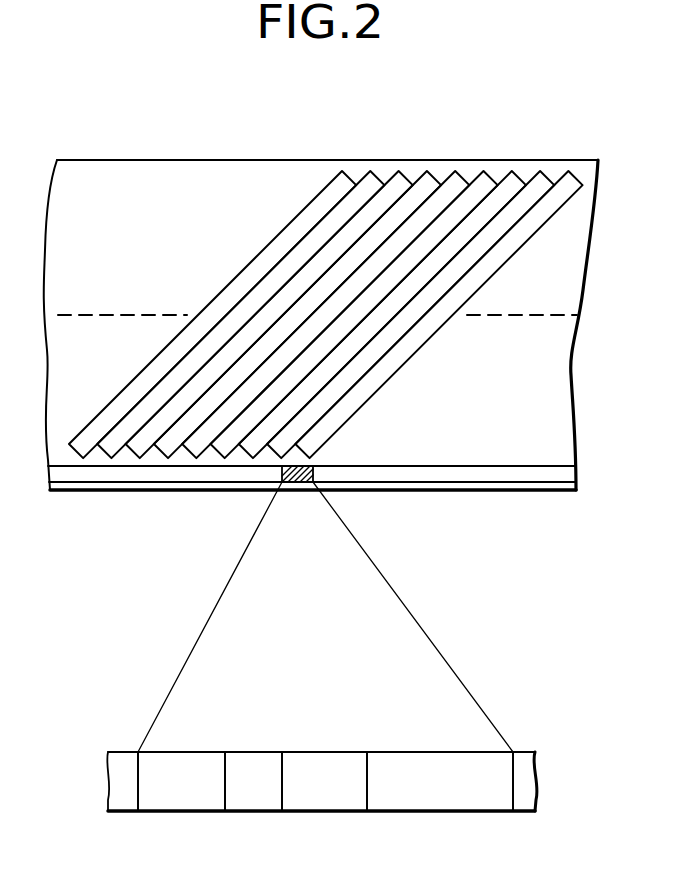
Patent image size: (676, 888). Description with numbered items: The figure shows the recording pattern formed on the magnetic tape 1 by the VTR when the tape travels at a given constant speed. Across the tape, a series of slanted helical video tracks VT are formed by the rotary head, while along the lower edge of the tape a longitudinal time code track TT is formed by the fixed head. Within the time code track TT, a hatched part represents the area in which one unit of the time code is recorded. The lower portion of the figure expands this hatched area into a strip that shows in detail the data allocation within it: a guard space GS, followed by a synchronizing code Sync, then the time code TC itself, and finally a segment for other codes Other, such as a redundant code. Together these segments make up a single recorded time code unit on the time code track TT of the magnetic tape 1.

The magnetic tape 1 is at (186, 160).
The helical video tracks VT is at (548, 178).
The time code track TT is at (485, 474).
The guard space GS is at (177, 801).
The synchronizing code Sync is at (255, 801).
The time code TC is at (330, 801).
The other codes Other is at (441, 801).